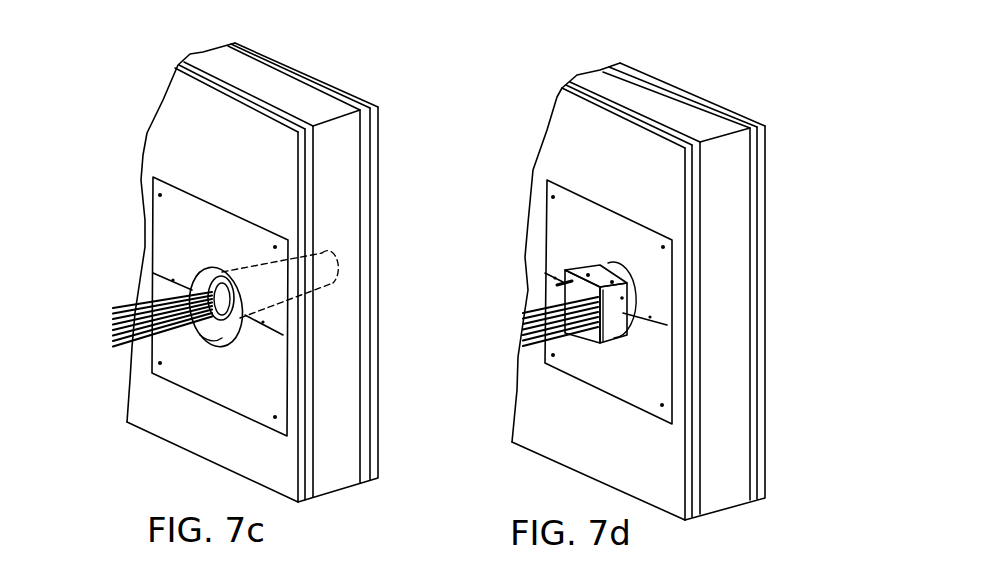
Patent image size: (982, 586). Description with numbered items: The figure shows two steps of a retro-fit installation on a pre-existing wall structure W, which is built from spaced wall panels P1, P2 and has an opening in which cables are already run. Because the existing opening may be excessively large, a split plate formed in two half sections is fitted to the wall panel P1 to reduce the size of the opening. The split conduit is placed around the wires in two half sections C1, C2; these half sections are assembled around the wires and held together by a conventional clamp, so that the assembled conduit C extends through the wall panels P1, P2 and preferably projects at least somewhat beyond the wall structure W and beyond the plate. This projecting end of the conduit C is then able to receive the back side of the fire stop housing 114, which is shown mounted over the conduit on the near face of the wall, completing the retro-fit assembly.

In FIG. 7C, the wall structure W is at (244, 255).
In FIG. 7D, the wall structure W is at (636, 274).
In FIG. 7C, the wall panel P1 is at (188, 107).
In FIG. 7D, the wall panel P1 is at (568, 127).
In FIG. 7C, the wall panel P2 is at (319, 78).
In FIG. 7D, the wall panel P2 is at (698, 95).
In FIG. 7C, the assembled conduit C is at (206, 270).
In FIG. 7C, the split conduit half section C1 is at (200, 283).
In FIG. 7C, the split conduit half section C2 is at (211, 325).
In FIG. 7D, the fire stop housing 114 is at (565, 259).